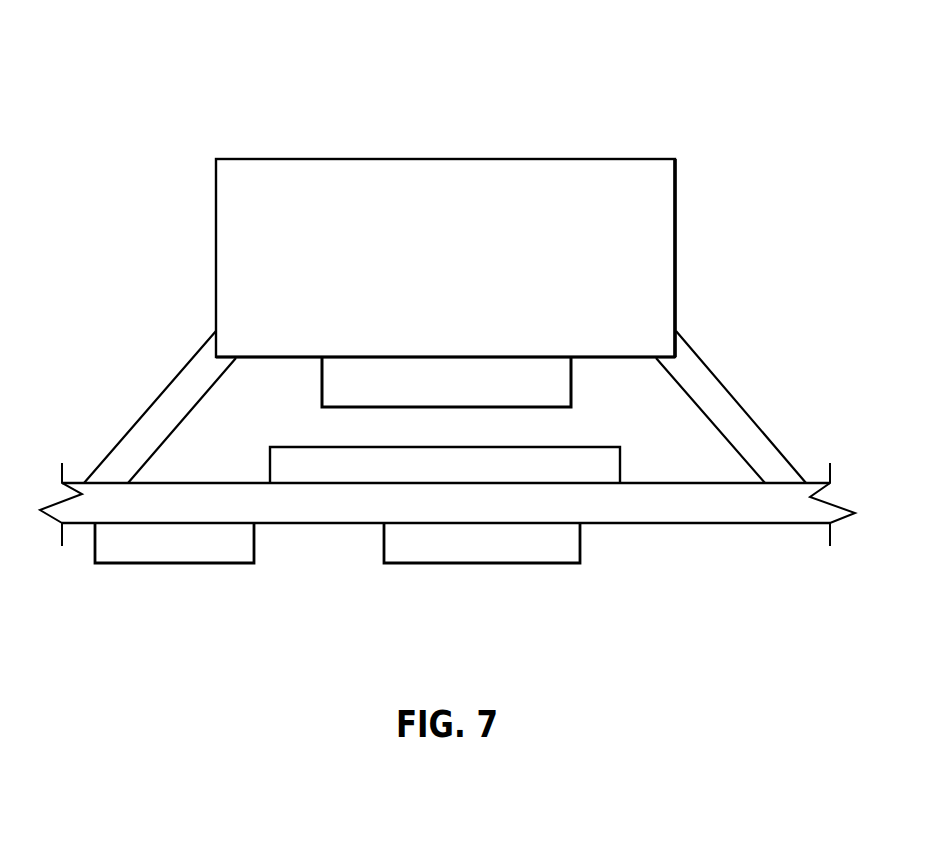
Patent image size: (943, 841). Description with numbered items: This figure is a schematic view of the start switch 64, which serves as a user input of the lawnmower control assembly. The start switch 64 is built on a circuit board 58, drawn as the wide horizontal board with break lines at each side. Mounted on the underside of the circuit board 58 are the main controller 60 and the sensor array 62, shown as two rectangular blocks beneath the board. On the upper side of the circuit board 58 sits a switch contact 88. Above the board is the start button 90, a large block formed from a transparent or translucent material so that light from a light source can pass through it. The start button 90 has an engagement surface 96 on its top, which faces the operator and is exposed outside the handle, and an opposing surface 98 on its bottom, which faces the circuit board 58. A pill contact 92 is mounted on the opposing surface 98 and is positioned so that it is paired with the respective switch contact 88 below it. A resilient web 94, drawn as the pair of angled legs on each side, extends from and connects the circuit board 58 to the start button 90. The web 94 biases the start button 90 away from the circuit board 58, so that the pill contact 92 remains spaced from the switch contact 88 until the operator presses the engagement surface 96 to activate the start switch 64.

The circuit board 58 is at (680, 525).
The main controller 60 is at (175, 565).
The sensor array 62 is at (482, 565).
The start switch 64 is at (450, 112).
The switch contact 88 is at (308, 485).
The start button 90 is at (233, 158).
The pill contact 92 is at (322, 391).
The resilient web 94 is at (120, 441).
The engagement surface 96 is at (568, 158).
The opposing surface 98 is at (620, 358).